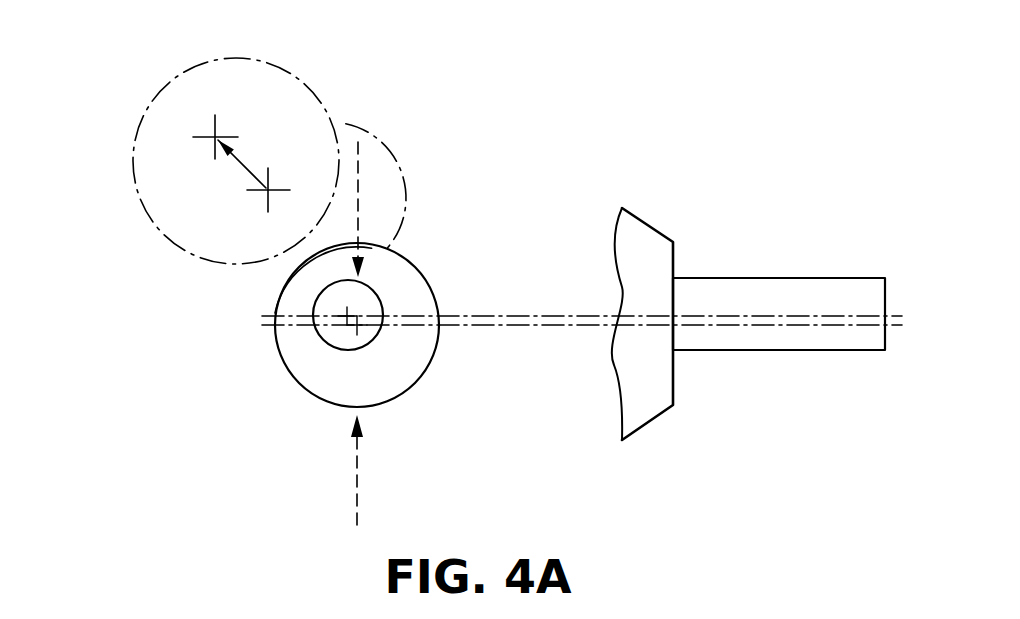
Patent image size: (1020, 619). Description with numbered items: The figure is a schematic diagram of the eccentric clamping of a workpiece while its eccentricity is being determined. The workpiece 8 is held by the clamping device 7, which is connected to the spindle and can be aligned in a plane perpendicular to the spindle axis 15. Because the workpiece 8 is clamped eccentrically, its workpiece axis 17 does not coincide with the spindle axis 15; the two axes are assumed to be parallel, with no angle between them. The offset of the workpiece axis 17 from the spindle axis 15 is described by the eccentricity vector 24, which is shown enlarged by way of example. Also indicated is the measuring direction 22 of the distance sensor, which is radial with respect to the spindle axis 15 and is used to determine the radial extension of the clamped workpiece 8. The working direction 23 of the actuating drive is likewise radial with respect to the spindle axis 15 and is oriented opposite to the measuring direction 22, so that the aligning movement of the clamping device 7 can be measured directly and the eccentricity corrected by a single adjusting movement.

The clamping device 7 is at (384, 276).
The workpiece 8 is at (337, 350).
The spindle axis 15 is at (267, 190).
The workpiece axis 17 is at (215, 137).
The measuring direction 22 is at (275, 313).
The working direction 23 is at (358, 480).
The eccentricity vector 24 is at (243, 160).